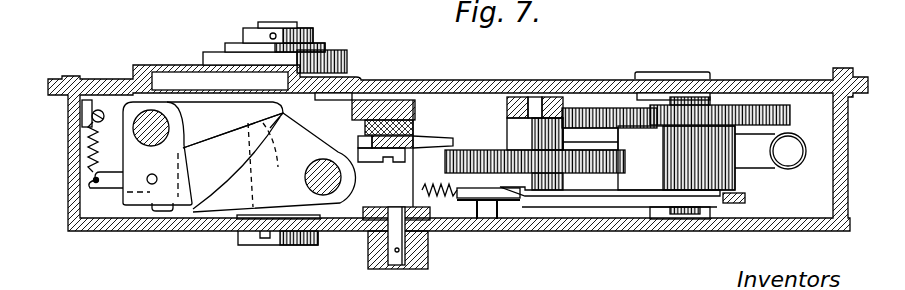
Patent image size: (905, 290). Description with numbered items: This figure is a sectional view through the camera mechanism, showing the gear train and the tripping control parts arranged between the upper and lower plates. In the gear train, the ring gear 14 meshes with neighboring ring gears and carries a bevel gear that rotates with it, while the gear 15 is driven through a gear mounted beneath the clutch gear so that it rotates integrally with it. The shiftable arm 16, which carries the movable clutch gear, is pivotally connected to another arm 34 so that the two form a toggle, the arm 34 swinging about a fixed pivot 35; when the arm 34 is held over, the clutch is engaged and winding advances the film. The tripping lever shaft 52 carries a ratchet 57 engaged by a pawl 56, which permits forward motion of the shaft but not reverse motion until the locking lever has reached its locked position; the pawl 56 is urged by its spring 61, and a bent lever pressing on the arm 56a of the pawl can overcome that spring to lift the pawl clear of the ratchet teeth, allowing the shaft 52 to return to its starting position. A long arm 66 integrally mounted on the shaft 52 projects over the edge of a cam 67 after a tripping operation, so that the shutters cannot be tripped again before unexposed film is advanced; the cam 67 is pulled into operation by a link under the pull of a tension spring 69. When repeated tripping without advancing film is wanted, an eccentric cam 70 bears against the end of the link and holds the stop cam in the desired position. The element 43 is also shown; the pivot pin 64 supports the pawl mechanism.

The ring gear 14 is at (753, 107).
The gear 15 is at (578, 173).
The shiftable arm 16 is at (414, 103).
The arm 34 is at (414, 127).
The fixed pivot 35 is at (415, 146).
The rack 43 is at (278, 240).
The tripping lever shaft 52 is at (328, 180).
The pawl 56 is at (197, 113).
The arm on the pawl 56a is at (163, 212).
The ratchet 57 is at (260, 143).
The spring 61 is at (82, 157).
The pivot pin 64 is at (140, 117).
The long arm 66 is at (223, 197).
The cam 67 is at (140, 202).
The tension spring 69 is at (448, 198).
The eccentric cam 70 is at (372, 207).